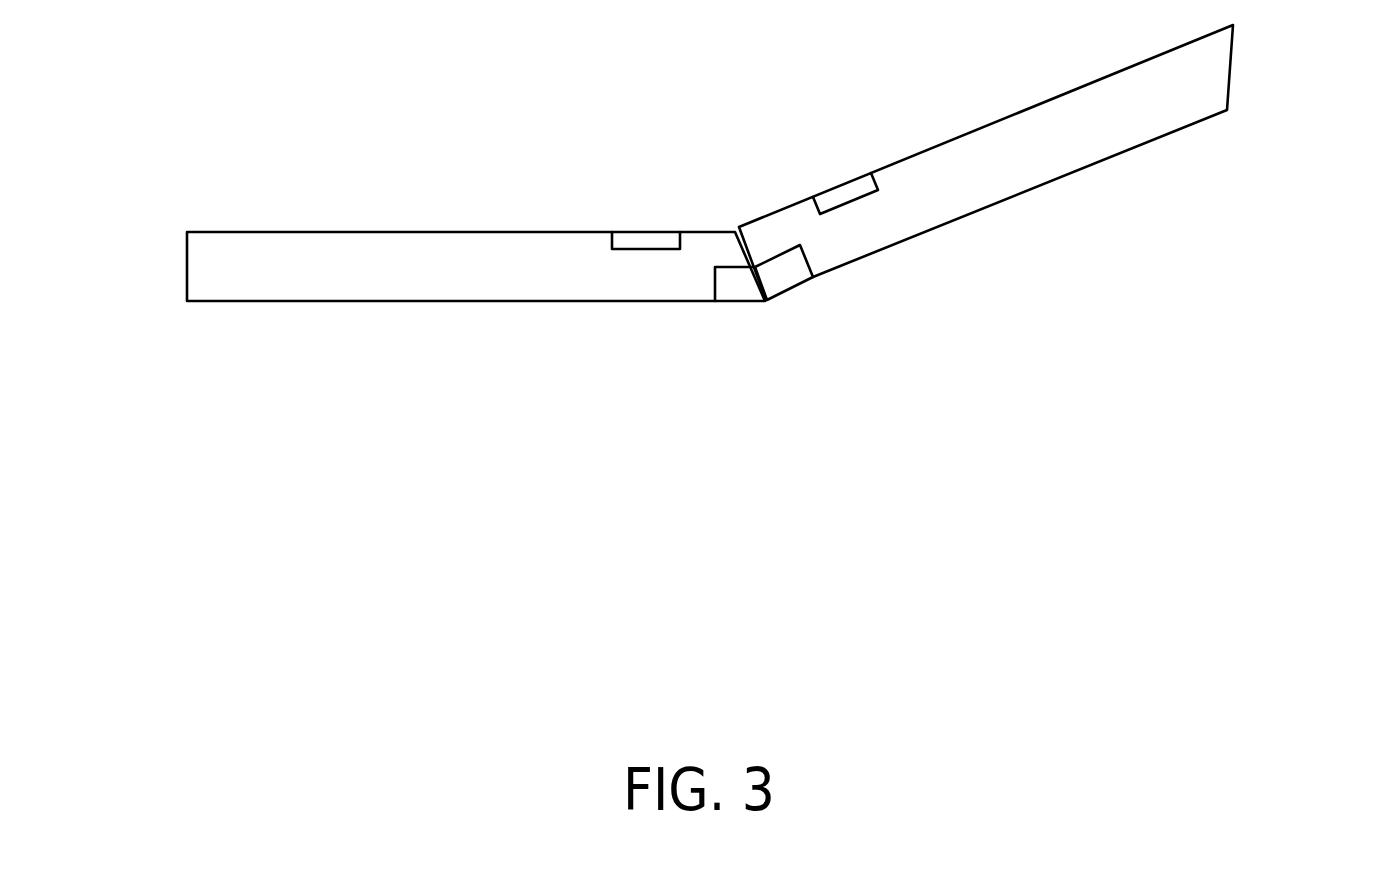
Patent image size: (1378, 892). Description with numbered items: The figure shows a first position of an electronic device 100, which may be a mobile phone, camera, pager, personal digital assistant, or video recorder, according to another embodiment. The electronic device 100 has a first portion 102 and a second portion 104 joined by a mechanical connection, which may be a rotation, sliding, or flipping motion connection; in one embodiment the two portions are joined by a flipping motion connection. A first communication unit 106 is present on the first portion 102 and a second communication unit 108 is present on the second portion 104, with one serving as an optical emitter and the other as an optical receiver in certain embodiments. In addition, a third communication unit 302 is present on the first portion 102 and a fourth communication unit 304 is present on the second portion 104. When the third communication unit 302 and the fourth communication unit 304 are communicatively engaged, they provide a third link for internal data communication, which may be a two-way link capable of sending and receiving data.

The electronic device 100 is at (1215, 398).
The first portion 102 is at (1232, 75).
The second portion 104 is at (187, 268).
The first communication unit 106 is at (800, 288).
The second communication unit 108 is at (732, 302).
The third communication unit 302 is at (835, 190).
The fourth communication unit 304 is at (648, 231).